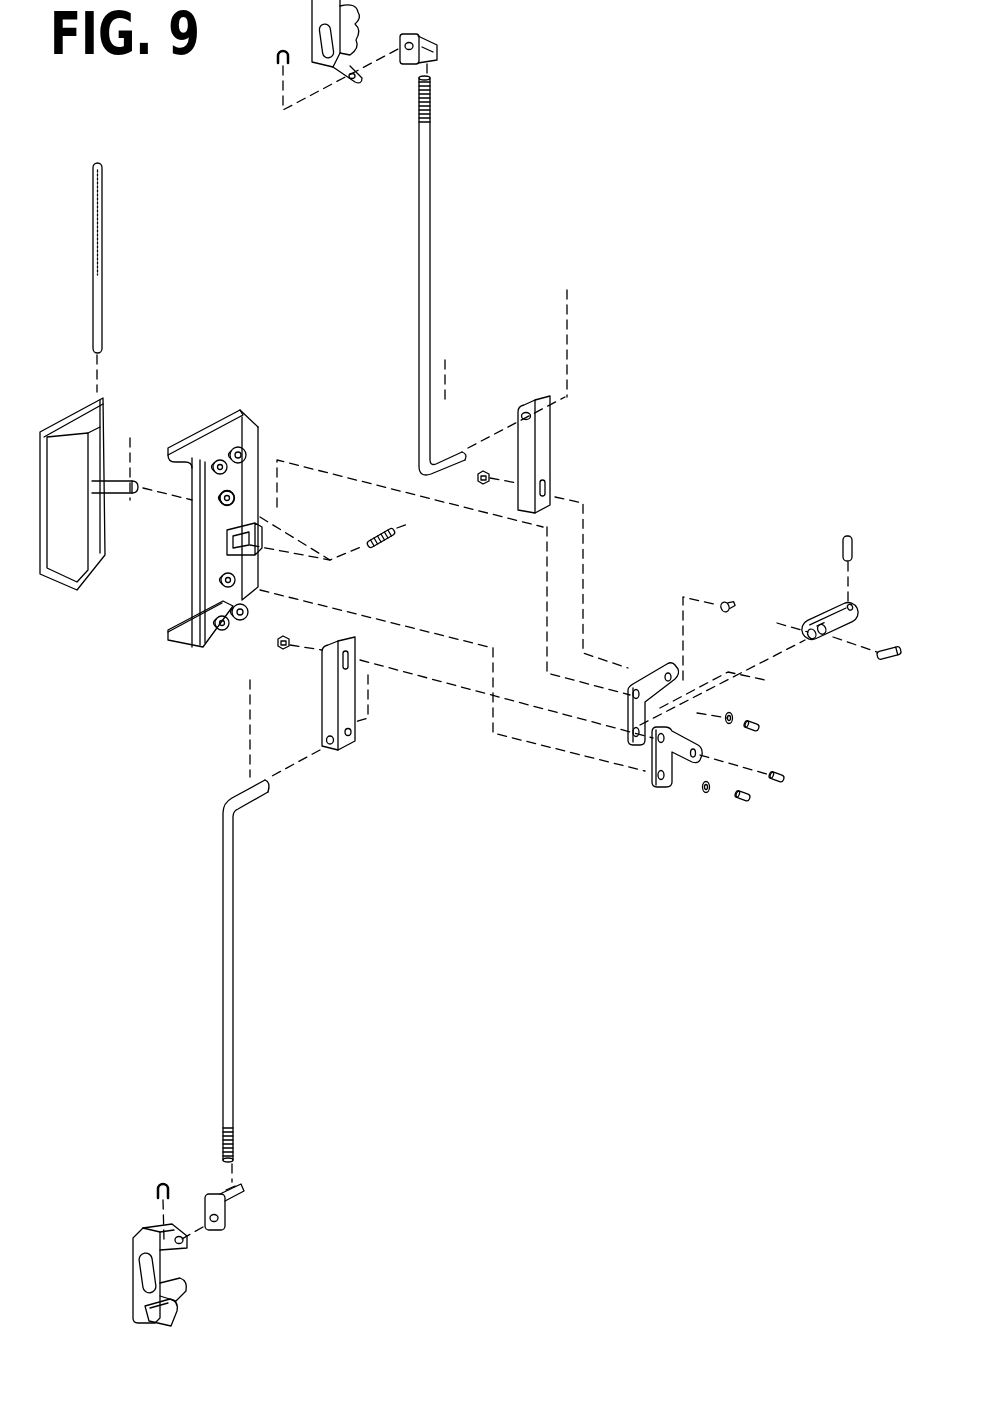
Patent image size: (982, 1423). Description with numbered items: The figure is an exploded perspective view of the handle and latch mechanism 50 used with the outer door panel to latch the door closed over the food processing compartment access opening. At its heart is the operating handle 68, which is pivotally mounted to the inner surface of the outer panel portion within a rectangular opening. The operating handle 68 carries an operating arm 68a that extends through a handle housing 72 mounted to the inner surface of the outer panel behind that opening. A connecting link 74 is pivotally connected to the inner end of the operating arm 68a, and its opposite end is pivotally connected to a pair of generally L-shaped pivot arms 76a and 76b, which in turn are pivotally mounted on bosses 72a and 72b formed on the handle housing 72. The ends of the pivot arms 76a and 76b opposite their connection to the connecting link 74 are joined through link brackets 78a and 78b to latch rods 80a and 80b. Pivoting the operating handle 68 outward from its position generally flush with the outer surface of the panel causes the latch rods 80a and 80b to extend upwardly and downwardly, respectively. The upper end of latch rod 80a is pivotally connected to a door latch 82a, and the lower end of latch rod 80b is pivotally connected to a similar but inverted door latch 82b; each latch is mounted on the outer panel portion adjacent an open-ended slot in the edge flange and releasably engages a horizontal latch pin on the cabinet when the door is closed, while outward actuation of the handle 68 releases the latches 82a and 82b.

The handle and latch mechanism 50 is at (603, 212).
The operating handle 68 is at (44, 576).
The operating arm 68a is at (118, 480).
The handle housing 72 is at (213, 560).
The boss 72a is at (222, 505).
The boss 72b is at (207, 602).
The connecting link 74 is at (828, 614).
The L-shaped pivot arm 76a is at (637, 676).
The L-shaped pivot arm 76b is at (683, 766).
The link bracket 78a is at (546, 447).
The link bracket 78b is at (336, 712).
The latch rod 80a is at (430, 255).
The latch rod 80b is at (235, 960).
The door latch 82a is at (313, 40).
The door latch 82b is at (140, 1284).